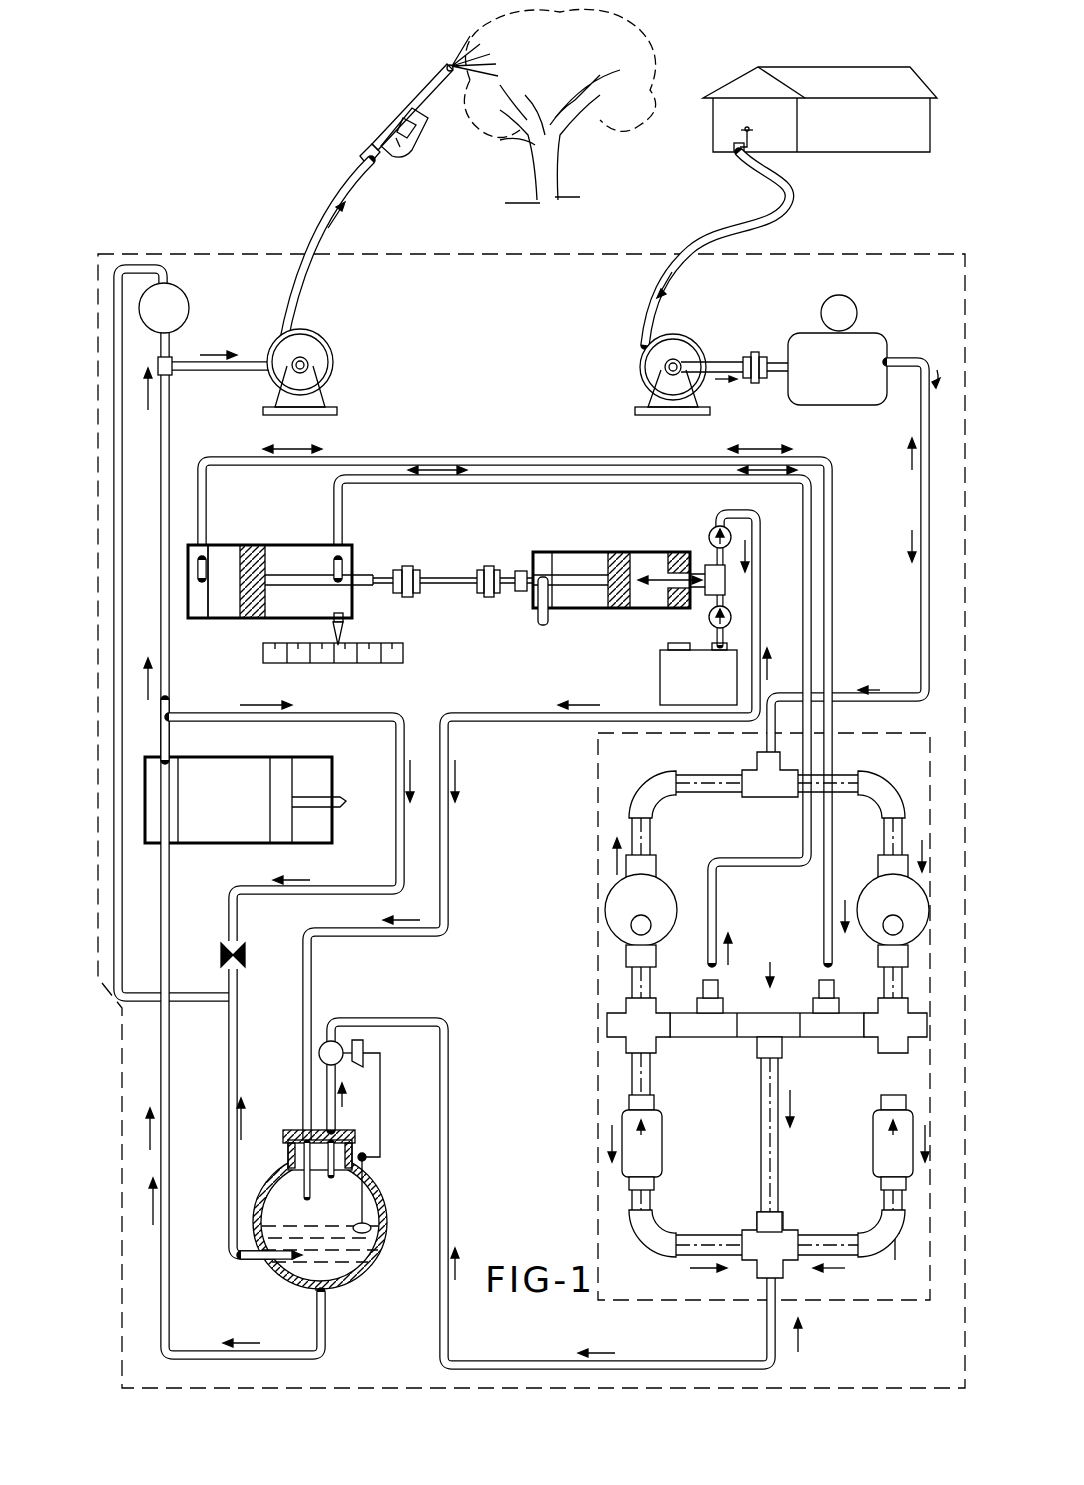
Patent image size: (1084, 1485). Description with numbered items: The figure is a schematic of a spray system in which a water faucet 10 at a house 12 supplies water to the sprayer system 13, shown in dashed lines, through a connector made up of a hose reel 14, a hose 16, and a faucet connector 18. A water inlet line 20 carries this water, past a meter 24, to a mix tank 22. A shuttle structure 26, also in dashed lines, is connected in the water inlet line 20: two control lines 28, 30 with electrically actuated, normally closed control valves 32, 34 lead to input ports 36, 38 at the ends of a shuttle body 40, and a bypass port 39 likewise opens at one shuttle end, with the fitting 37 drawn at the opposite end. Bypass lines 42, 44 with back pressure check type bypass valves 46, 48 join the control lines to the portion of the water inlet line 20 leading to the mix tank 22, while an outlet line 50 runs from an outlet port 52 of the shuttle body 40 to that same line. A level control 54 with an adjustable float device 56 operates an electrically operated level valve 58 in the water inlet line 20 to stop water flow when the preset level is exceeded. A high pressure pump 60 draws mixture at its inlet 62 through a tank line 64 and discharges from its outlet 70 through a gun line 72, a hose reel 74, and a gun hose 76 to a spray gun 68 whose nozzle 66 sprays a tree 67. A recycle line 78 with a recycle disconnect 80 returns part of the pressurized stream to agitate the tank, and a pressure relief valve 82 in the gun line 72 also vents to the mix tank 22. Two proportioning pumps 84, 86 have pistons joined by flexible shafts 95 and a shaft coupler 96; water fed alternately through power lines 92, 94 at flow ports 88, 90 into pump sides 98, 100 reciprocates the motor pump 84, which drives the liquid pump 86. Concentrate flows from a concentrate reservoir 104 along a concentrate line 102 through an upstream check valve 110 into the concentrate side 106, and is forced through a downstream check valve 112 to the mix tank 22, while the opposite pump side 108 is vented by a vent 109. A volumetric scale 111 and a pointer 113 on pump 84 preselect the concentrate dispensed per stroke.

The water faucet 10 is at (758, 140).
The house 12 is at (850, 148).
The sprayer system 13 is at (524, 258).
The hose reel 14 is at (645, 358).
The hose 16 is at (738, 248).
The faucet connector 18 is at (734, 150).
The water inlet line 20 is at (738, 350).
The mix tank 22 is at (338, 1278).
The meter 24 is at (845, 395).
The shuttle structure 26 is at (600, 790).
The control line 28 is at (682, 818).
The control line 30 is at (905, 820).
The control valve 32 is at (658, 880).
The control valve 34 is at (868, 890).
The input port 36 is at (656, 1002).
The left cross fitting 37 is at (602, 1038).
The input port 38 is at (870, 1005).
The bypass port 39 is at (878, 1045).
The shuttle body 40 is at (767, 1015).
The bypass line 42 is at (652, 1074).
The bypass line 44 is at (878, 1202).
The bypass valve 46 is at (662, 1148).
The bypass valve 48 is at (870, 1150).
The outlet line 50 is at (760, 1113).
The outlet port 52 is at (760, 1050).
The level control 54 is at (386, 1148).
The adjustable float device 56 is at (370, 1218).
The level valve 58 is at (358, 1038).
The high pressure pump 60 is at (188, 838).
The inlet 62 is at (124, 848).
The tank line 64 is at (172, 1180).
The nozzle 66 is at (440, 66).
The tree 67 is at (486, 150).
The spray gun 68 is at (404, 160).
The outlet 70 is at (130, 752).
The gun line 72 is at (160, 398).
The hose reel 74 is at (340, 368).
The gun hose 76 is at (305, 304).
The recycle line 78 is at (180, 716).
The recycle disconnect 80 is at (242, 955).
The pressure relief valve 82 is at (190, 282).
The proportioning pump 84 is at (250, 545).
The proportioning pump 86 is at (604, 552).
The flow port 88 is at (720, 1005).
The flow port 90 is at (812, 1003).
The power line 92 is at (345, 526).
The power line 94 is at (210, 507).
The shafts 95 is at (384, 562).
The shaft coupler 96 is at (468, 562).
The pump side 98 is at (346, 618).
The pump side 100 is at (200, 620).
The concentrate line 102 is at (738, 515).
The concentrate reservoir 104 is at (660, 675).
The concentrate side 106 is at (700, 552).
The pump side 108 is at (556, 545).
The vent 109 is at (548, 620).
The upstream check valve 110 is at (732, 620).
The volumetric scale 111 is at (402, 665).
The downstream check valve 112 is at (732, 536).
The pointer 113 is at (344, 630).